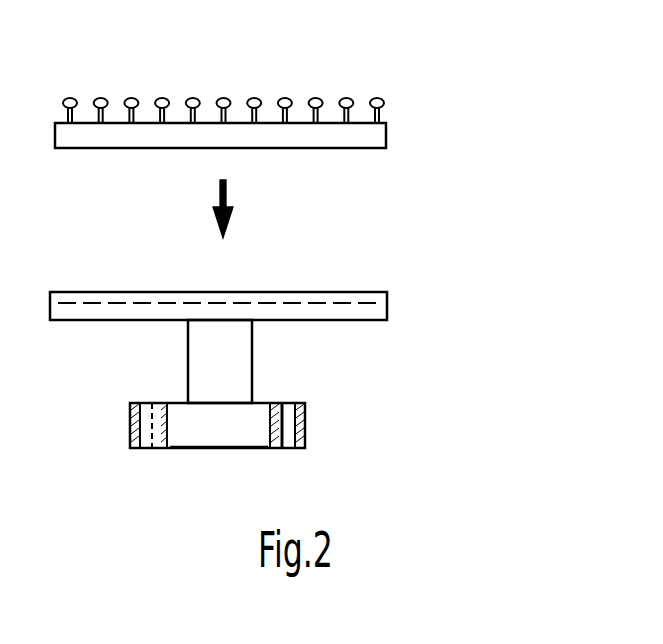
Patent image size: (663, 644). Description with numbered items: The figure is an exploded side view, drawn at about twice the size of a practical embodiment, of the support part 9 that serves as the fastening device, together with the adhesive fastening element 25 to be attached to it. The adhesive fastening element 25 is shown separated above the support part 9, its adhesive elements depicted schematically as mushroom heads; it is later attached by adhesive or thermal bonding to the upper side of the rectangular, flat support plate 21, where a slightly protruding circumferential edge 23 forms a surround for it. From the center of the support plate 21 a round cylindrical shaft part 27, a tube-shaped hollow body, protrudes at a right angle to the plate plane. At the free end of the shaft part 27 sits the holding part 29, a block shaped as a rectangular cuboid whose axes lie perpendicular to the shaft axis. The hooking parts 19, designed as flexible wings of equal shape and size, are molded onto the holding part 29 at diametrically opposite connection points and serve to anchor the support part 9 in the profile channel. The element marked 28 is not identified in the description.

The adhesive fastening element 25 is at (386, 130).
The support part 9 is at (403, 242).
The support plate 21 is at (352, 312).
The circumferential edge 23 is at (387, 292).
The shaft part 27 is at (190, 353).
The base body 28 is at (262, 400).
The hooking parts 19 is at (147, 447).
The holding part 29 is at (218, 445).